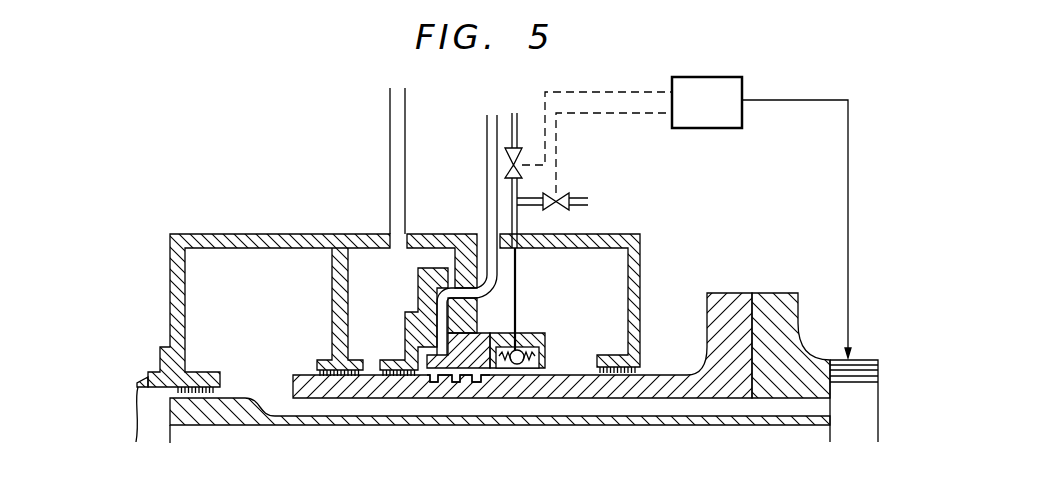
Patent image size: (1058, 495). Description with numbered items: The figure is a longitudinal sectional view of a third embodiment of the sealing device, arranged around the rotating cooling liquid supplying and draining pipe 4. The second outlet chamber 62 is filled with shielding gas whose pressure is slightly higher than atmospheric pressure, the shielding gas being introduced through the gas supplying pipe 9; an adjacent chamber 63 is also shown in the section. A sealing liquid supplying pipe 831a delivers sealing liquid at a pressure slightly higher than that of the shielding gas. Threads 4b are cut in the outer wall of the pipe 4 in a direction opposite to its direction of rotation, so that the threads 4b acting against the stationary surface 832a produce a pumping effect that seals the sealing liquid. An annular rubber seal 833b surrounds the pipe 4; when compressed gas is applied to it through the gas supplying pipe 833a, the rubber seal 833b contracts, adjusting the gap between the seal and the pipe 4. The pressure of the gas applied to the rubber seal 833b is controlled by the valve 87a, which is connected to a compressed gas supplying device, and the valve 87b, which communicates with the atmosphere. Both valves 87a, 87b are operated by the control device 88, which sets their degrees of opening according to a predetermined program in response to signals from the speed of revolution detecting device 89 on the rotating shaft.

The cooling liquid supplying and draining pipe 4 is at (578, 458).
The threads 4b is at (461, 382).
The gas supplying pipe 9 is at (398, 128).
The second outlet chamber 62 is at (349, 309).
The chamber 63 is at (570, 300).
The valve 87a is at (519, 162).
The valve 87b is at (562, 208).
The control device 88 is at (686, 217).
The speed of revolution detecting device 89 is at (852, 358).
The sealing liquid supplying pipe 831a is at (492, 191).
The stationary surface 832a is at (440, 380).
The gas supplying pipe 833a is at (518, 271).
The annular rubber seal 833b is at (543, 349).